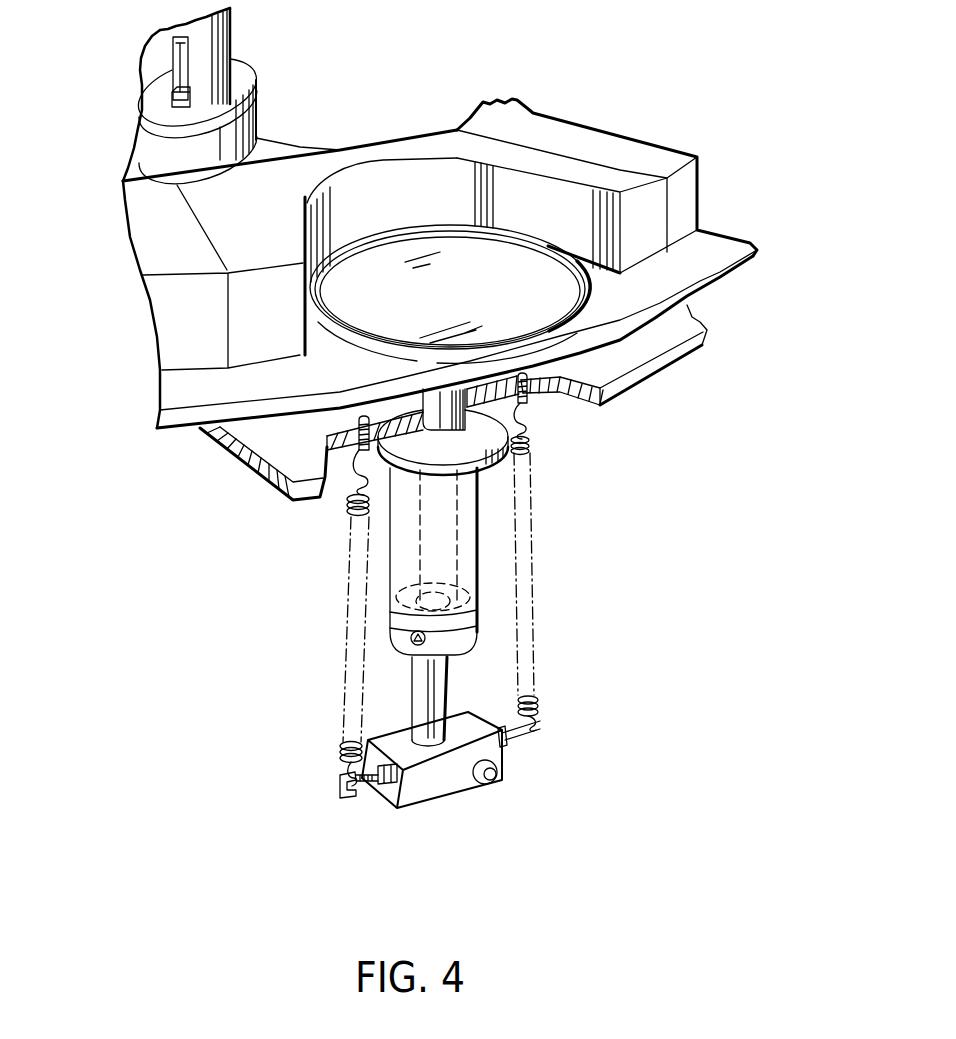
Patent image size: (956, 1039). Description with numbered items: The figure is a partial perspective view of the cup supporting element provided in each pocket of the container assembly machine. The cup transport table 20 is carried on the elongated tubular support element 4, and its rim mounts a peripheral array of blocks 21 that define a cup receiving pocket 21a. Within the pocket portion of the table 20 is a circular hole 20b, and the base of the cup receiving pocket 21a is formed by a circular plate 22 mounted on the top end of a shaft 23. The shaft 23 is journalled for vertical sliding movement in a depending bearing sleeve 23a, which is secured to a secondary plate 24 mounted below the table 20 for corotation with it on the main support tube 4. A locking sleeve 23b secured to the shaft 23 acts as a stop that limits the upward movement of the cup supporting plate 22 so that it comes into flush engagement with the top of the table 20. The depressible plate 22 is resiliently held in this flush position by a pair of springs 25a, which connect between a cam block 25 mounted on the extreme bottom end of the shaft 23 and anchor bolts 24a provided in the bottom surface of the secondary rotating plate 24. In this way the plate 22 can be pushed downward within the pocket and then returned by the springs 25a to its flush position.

The tubular support element 4 is at (231, 24).
The cup transport table 20 is at (720, 240).
The circular hole 20b is at (578, 292).
The blocks 21 is at (598, 162).
The cup receiving pocket 21a is at (429, 188).
The circular plate 22 is at (393, 323).
The shaft 23 is at (448, 682).
The bearing sleeve 23a is at (480, 527).
The locking sleeve 23b is at (480, 627).
The secondary plate 24 is at (667, 362).
The anchor bolts 24a is at (530, 400).
The cam block 25 is at (505, 745).
The springs 25a is at (363, 565).